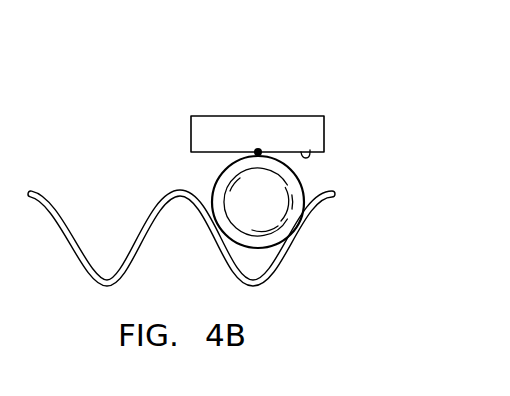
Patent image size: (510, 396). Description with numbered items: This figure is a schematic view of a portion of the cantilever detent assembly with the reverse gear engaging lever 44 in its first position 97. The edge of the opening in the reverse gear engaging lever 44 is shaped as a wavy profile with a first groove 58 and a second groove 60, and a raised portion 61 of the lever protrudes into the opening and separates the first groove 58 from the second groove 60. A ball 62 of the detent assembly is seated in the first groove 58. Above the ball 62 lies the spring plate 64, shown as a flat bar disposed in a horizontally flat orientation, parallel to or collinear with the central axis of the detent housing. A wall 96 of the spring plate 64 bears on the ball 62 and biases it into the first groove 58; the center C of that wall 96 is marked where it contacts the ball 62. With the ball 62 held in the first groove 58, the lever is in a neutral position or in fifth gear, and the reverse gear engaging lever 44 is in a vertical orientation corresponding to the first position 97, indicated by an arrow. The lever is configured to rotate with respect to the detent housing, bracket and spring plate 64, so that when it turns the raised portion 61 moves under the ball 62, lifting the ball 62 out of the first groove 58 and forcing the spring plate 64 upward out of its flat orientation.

The reverse gear engaging lever 44 is at (69, 247).
The second groove 60 is at (93, 258).
The raised portion 61 is at (180, 189).
The first groove 58 is at (278, 254).
The ball 62 is at (252, 176).
The spring plate 64 is at (276, 110).
The wall 96 is at (310, 151).
The first position 97 is at (310, 270).
The center C is at (258, 152).